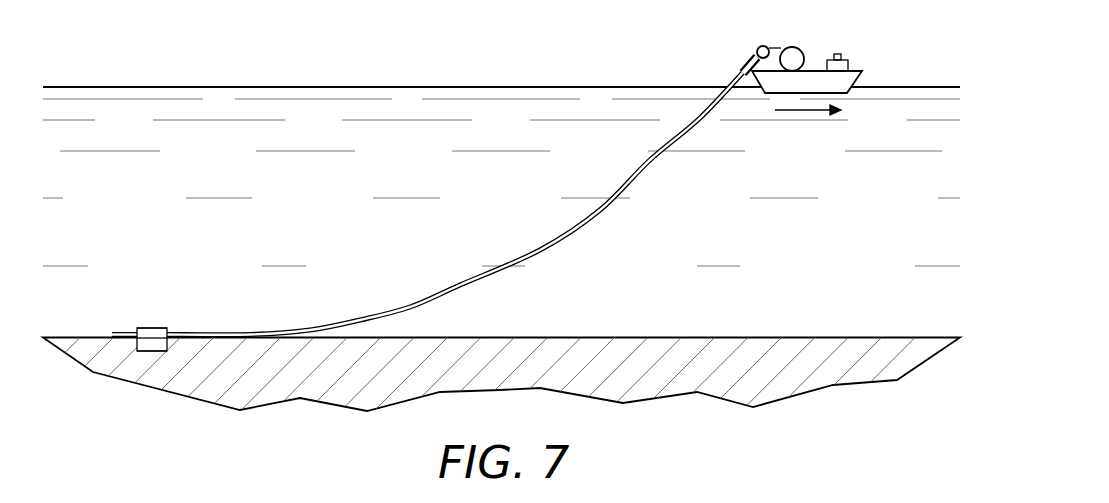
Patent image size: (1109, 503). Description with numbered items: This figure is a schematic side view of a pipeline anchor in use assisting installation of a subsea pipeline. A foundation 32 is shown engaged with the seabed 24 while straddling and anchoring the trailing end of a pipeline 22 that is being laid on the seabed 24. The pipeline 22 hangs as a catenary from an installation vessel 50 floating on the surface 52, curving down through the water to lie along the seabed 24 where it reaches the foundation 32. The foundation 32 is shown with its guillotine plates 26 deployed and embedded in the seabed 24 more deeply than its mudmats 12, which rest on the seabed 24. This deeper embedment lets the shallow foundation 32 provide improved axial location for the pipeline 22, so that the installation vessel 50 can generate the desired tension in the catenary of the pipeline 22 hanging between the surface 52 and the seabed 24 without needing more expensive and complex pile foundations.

The surface 52 is at (243, 87).
The installation vessel 50 is at (815, 70).
The pipeline 22 is at (538, 252).
The seabed 24 is at (807, 337).
The mudmats 12 is at (151, 328).
The foundation 32 is at (119, 313).
The guillotine plates 26 is at (150, 352).